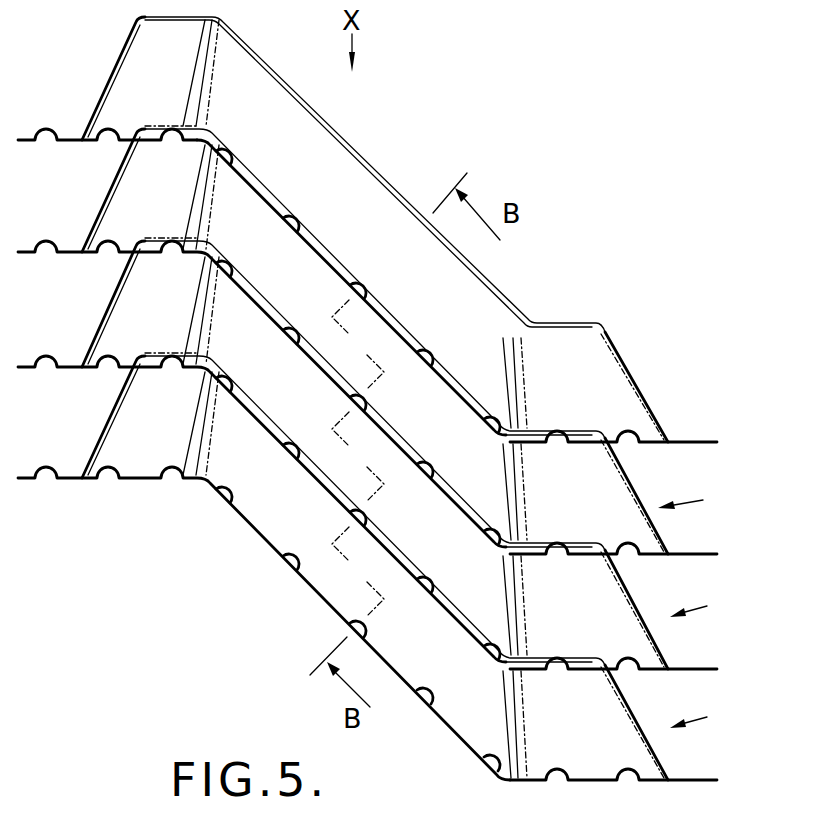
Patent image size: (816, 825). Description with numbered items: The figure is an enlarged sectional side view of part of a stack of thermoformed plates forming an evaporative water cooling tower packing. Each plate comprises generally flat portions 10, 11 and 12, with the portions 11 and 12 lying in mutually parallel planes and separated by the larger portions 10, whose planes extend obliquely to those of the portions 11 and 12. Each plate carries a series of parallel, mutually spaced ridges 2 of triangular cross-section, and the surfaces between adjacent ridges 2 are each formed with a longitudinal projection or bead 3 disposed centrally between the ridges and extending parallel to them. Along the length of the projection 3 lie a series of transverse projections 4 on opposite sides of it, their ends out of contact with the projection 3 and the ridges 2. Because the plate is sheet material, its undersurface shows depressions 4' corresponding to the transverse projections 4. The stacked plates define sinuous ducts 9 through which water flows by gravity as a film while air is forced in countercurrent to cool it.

The ridge 2 is at (560, 322).
The longitudinal projection or bead 3 is at (458, 390).
The transverse projection 4 is at (437, 675).
The depression corresponding to transverse projection 4' is at (425, 696).
The sinuous duct 9 is at (692, 611).
The oblique flat portion 10 is at (322, 261).
The flat portion 11 is at (24, 139).
The flat portion 12 is at (708, 440).